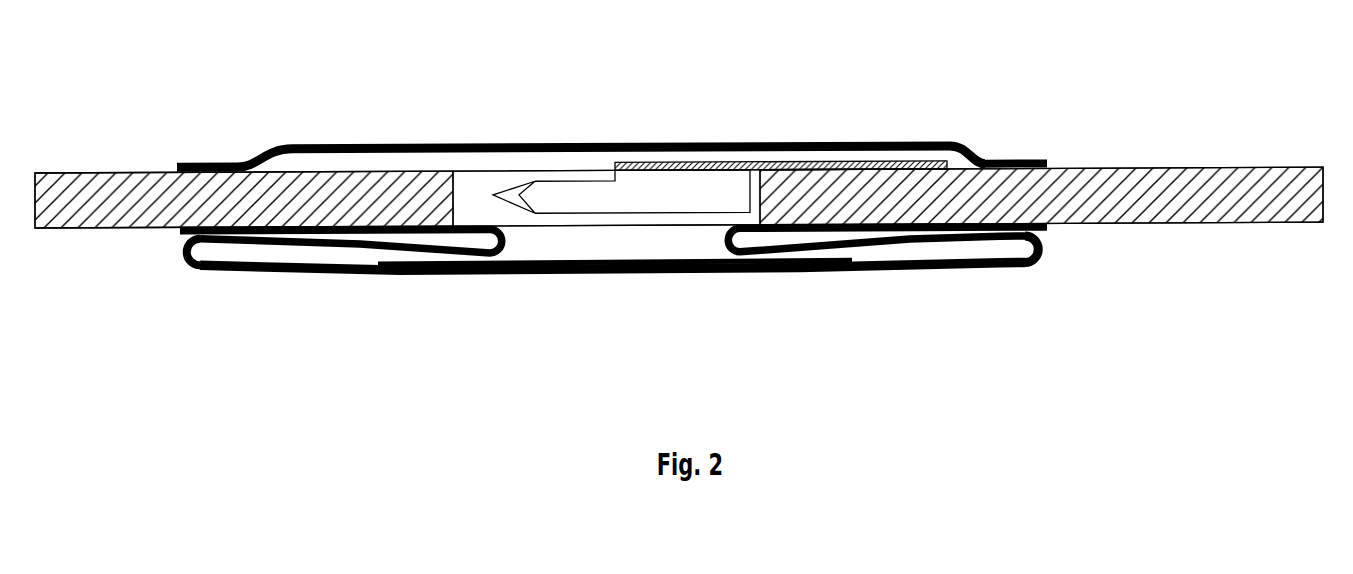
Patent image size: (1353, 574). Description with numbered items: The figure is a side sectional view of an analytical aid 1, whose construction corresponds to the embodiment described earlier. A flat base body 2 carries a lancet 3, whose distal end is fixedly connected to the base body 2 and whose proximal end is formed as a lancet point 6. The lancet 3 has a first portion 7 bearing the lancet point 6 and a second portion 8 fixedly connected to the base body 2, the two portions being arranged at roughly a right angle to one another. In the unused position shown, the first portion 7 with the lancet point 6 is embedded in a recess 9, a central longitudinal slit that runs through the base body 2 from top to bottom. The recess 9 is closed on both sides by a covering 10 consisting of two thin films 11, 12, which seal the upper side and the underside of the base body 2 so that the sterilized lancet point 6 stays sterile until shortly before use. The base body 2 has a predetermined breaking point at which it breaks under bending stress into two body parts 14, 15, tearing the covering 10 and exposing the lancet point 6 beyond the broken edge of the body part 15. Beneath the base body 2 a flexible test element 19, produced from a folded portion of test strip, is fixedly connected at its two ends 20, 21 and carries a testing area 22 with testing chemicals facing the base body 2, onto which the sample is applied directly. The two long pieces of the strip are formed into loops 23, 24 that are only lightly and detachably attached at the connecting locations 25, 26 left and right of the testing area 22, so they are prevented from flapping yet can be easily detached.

The analytical aid 1 is at (334, 76).
The base body 2 is at (679, 168).
The lancet 3 is at (632, 197).
The lancet point 6 is at (495, 192).
The first portion 7 is at (702, 195).
The second portion 8 is at (803, 162).
The recess 9 is at (470, 190).
The covering 10 is at (616, 213).
The thin film 11 is at (902, 147).
The thin film 12 is at (700, 272).
The body part 14 is at (98, 192).
The body part 15 is at (1200, 192).
The test element 19 is at (1013, 260).
The end 20 is at (183, 232).
The end 21 is at (1043, 230).
The testing area 22 is at (567, 257).
The loop 23 is at (352, 248).
The loop 24 is at (890, 243).
The connecting location 25 is at (250, 227).
The connecting location 26 is at (935, 220).